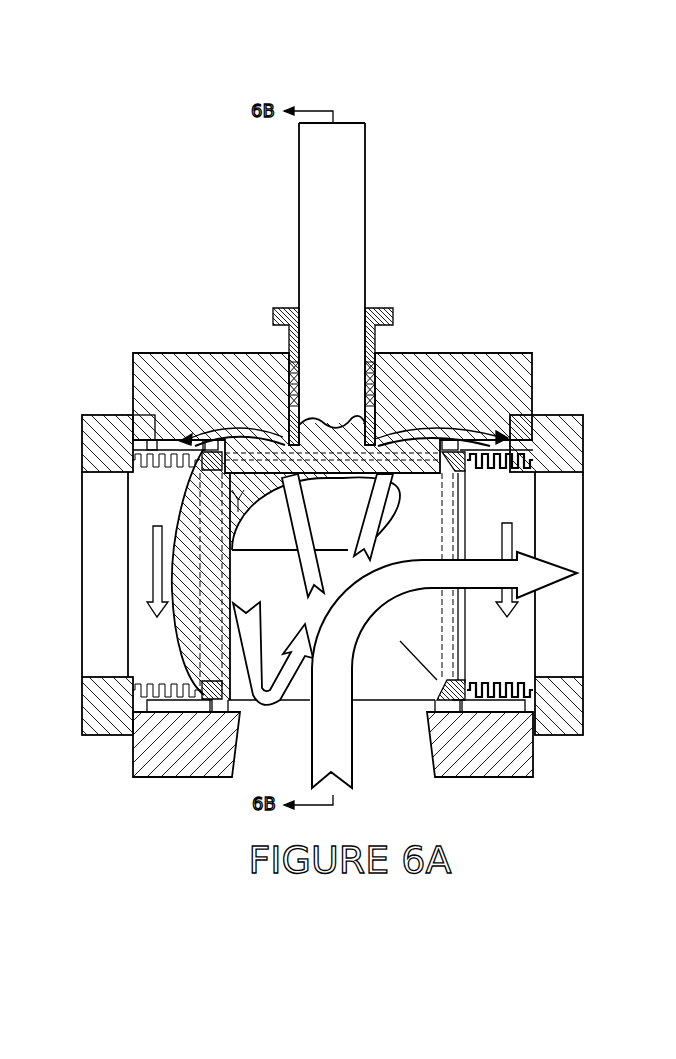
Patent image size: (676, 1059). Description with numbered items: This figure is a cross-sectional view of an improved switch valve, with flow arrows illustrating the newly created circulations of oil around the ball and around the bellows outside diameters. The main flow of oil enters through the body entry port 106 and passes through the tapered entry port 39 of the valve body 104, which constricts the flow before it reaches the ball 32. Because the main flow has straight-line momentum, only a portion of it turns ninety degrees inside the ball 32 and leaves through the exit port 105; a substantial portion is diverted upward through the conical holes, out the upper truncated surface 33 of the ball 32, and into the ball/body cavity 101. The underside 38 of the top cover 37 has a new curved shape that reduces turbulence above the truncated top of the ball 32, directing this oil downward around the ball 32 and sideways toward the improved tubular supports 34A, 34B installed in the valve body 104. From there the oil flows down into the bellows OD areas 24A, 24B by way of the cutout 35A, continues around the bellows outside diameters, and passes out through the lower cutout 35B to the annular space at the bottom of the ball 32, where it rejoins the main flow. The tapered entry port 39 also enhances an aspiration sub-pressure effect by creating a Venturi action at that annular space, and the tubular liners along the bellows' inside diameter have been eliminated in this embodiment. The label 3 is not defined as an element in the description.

The valve 3 is at (398, 552).
The bellows OD area 24A is at (512, 433).
The bellows OD area 24B is at (140, 425).
The ball 32 is at (183, 508).
The upper truncated surface 33 is at (366, 548).
The tubular support 34A is at (510, 437).
The tubular support 34B is at (168, 440).
The cutout 35A is at (153, 448).
The lower cutout 35B is at (182, 703).
The top cover 37 is at (291, 440).
The underside of the top cover 38 is at (242, 498).
The tapered entry port 39 is at (433, 750).
The ball/body cavity 101 is at (232, 510).
The valve body 104 is at (483, 762).
The exit port 105 is at (557, 530).
The body entry port 106 is at (248, 778).